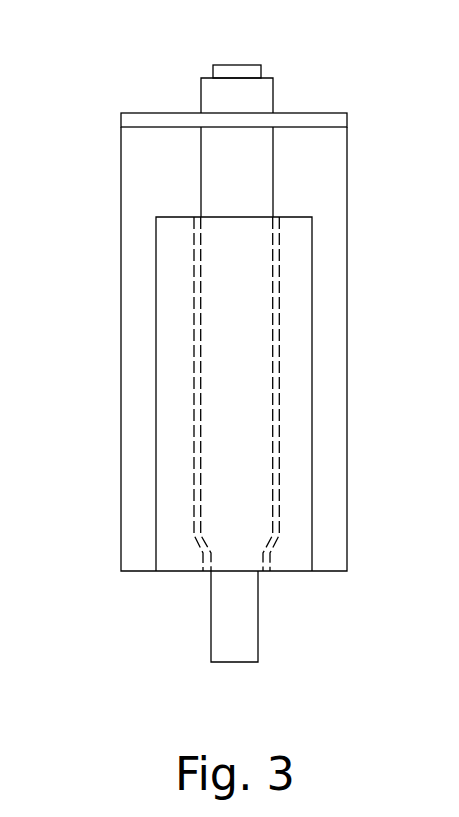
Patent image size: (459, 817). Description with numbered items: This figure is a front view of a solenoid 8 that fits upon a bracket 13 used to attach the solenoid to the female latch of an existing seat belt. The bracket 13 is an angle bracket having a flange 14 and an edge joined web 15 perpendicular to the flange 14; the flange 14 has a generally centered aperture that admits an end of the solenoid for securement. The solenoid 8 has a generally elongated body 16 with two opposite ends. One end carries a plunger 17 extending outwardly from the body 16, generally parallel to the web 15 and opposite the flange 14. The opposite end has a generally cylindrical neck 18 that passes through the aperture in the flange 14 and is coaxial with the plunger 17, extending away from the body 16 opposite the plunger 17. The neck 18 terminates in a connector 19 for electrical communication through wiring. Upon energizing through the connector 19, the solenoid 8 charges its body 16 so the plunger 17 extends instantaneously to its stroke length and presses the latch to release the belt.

The solenoid 8 is at (280, 415).
The bracket 13 is at (121, 152).
The flange 14 is at (288, 113).
The web 15 is at (335, 277).
The body 16 is at (293, 333).
The plunger 17 is at (239, 626).
The neck 18 is at (258, 168).
The connector 19 is at (233, 65).